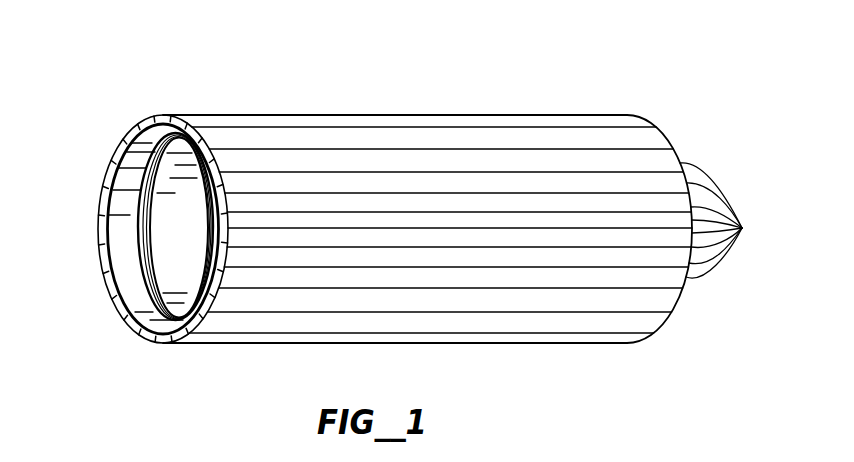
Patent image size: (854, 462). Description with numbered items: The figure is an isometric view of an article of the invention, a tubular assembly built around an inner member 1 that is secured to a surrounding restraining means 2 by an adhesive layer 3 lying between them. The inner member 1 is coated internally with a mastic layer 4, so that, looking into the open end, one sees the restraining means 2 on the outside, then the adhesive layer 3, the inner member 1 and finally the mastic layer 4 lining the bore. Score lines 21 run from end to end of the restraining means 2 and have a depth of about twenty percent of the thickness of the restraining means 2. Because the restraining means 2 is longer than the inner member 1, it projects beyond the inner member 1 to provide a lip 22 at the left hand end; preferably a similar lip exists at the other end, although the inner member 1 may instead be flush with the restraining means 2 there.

The inner member 1 is at (146, 252).
The restraining means 2 is at (383, 134).
The adhesive layer 3 is at (148, 240).
The mastic layer 4 is at (150, 225).
The score lines 21 is at (727, 220).
The lip 22 is at (130, 289).